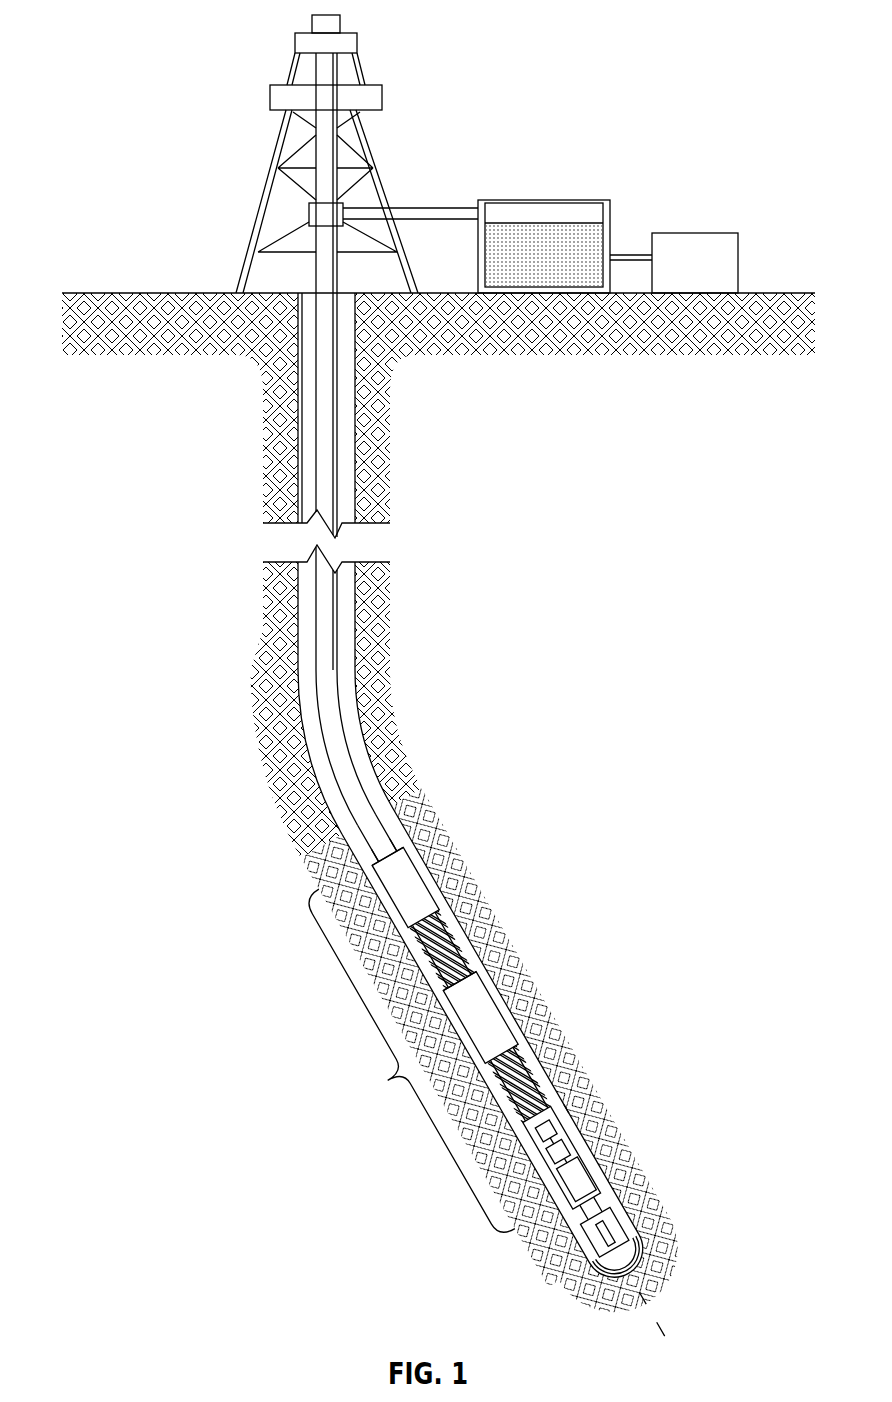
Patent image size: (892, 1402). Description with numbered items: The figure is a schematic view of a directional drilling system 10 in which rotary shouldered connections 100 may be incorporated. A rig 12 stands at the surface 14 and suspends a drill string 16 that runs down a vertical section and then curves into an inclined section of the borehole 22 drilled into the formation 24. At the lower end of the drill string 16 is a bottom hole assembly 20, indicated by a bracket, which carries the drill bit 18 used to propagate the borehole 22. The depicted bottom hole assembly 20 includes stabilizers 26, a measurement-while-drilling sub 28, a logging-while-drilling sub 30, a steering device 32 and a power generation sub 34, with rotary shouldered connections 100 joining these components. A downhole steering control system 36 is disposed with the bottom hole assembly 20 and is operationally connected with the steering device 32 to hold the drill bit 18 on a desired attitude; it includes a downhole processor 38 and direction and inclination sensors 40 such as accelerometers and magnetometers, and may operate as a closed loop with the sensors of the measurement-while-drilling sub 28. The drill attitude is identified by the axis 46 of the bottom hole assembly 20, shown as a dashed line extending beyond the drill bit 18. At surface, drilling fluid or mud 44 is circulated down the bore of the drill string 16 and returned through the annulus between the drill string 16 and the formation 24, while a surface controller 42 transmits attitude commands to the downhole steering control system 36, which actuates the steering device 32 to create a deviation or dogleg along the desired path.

The directional drilling system 10 is at (149, 111).
The rig 12 is at (258, 204).
The surface 14 is at (150, 293).
The drill string 16 is at (330, 618).
The drill bit 18 is at (628, 1230).
The bottom hole assembly 20 is at (401, 1067).
The borehole 22 is at (306, 476).
The formation 24 is at (301, 794).
The stabilizers 26 is at (462, 944).
The measurement-while-drilling module or sub 28 is at (490, 1022).
The logging-while-drilling module or sub 30 is at (418, 892).
The steering device 32 is at (582, 1175).
The power generation module or sub 34 is at (403, 862).
The downhole steering control system 36 is at (571, 1104).
The downhole processor 38 is at (548, 1131).
The direction and inclination sensors 40 is at (562, 1152).
The surface controller 42 is at (708, 277).
The drilling fluid or mud 44 is at (557, 269).
The axis of BHA 46 is at (654, 1319).
The rotary shouldered connection 100 is at (390, 850).